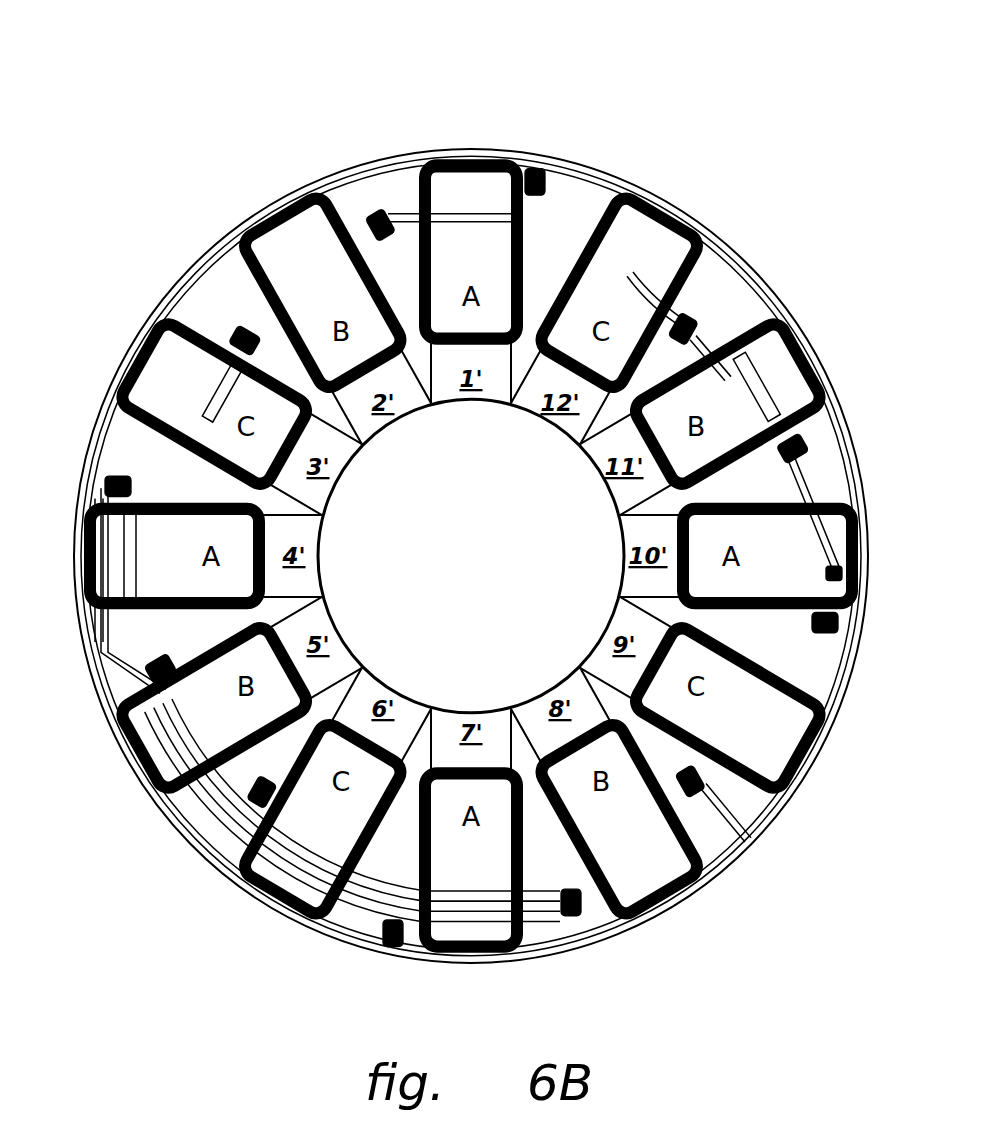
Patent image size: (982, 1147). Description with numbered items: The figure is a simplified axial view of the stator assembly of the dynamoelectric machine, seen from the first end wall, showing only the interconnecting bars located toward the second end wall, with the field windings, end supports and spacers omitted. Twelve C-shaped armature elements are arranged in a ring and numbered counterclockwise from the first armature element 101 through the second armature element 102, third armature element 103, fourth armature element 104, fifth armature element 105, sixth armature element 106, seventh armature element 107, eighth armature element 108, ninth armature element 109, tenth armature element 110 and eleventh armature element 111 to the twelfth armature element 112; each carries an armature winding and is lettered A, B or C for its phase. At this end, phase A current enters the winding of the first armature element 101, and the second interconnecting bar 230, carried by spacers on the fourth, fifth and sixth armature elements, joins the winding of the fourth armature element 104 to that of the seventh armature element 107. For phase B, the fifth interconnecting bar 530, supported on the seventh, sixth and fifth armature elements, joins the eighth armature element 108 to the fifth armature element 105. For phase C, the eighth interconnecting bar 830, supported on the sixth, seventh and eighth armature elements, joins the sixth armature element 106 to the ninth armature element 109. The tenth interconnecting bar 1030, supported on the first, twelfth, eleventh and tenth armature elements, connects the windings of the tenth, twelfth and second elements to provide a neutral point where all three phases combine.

The first armature element 101 is at (455, 205).
The second armature element 102 is at (290, 245).
The third armature element 103 is at (172, 380).
The fourth armature element 104 is at (125, 558).
The fifth armature element 105 is at (200, 742).
The sixth armature element 106 is at (332, 815).
The seventh armature element 107 is at (470, 925).
The eighth armature element 108 is at (650, 870).
The ninth armature element 109 is at (790, 730).
The tenth armature element 110 is at (830, 525).
The eleventh armature element 111 is at (783, 352).
The twelfth armature element 112 is at (640, 237).
The tenth interconnecting bar 1030 is at (627, 283).
The second interconnecting bar 230 is at (95, 655).
The fifth interconnecting bar 530 is at (575, 900).
The eighth interconnecting bar 830 is at (725, 790).